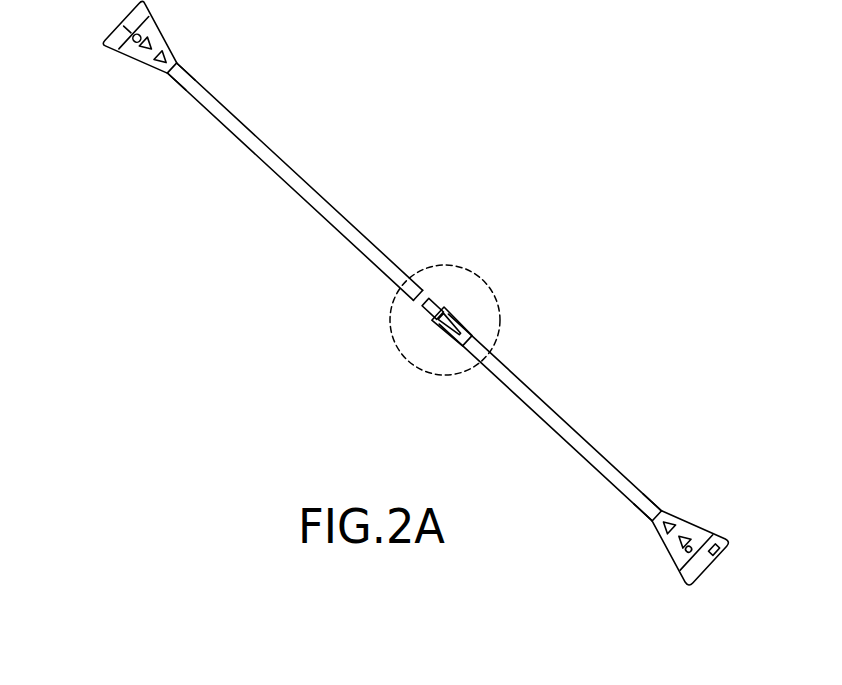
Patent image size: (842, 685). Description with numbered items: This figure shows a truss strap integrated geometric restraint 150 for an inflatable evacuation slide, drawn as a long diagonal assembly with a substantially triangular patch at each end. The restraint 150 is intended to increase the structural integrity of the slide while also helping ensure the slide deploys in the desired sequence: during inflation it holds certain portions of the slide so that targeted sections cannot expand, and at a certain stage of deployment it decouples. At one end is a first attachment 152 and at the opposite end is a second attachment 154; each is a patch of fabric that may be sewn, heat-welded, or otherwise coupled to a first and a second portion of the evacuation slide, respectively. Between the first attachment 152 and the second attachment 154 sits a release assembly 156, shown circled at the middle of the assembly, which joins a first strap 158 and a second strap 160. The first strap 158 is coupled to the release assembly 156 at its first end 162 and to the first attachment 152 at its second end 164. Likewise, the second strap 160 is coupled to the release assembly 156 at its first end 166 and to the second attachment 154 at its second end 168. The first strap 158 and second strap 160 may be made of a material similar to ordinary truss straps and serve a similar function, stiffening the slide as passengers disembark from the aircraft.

The truss strap integrated geometric restraint 150 is at (382, 190).
The first attachment 152 is at (125, 47).
The second attachment 154 is at (688, 572).
The release assembly 156 is at (486, 282).
The first strap 158 is at (297, 187).
The second strap 160 is at (597, 463).
The first end 162 is at (402, 283).
The second end 164 is at (177, 80).
The first end 166 is at (488, 363).
The second end 168 is at (657, 518).